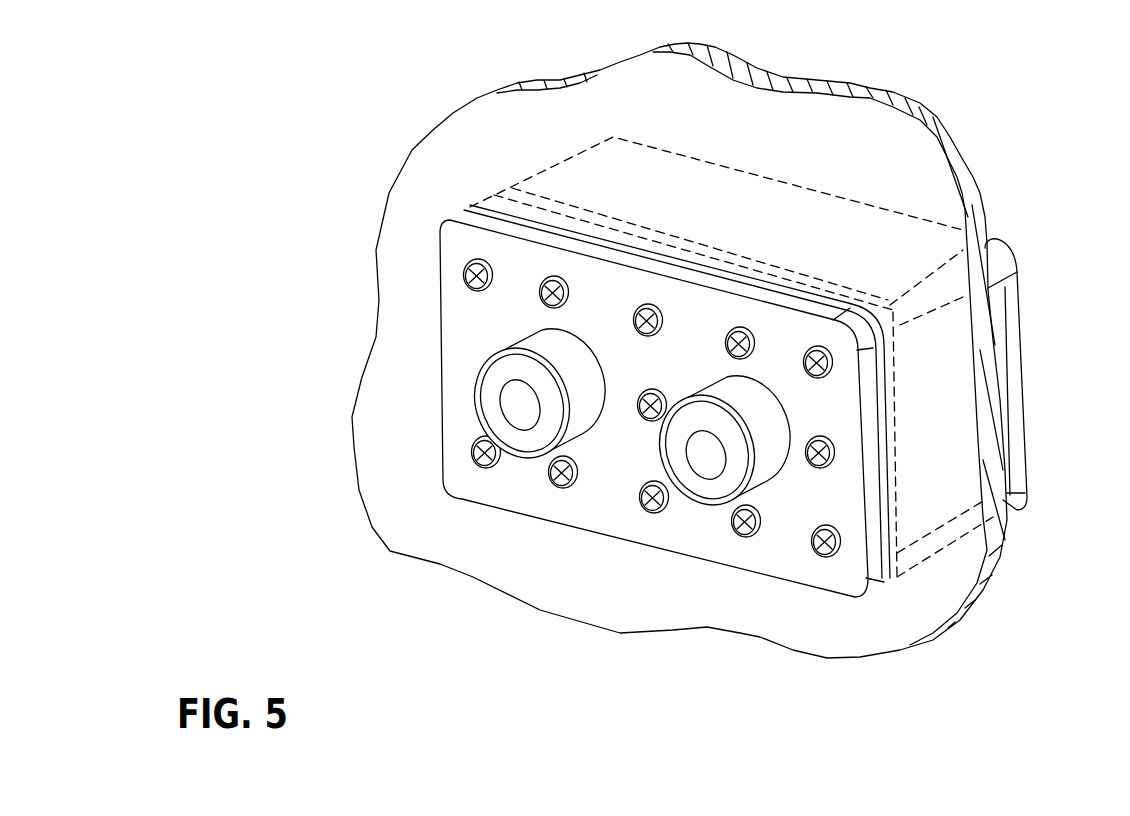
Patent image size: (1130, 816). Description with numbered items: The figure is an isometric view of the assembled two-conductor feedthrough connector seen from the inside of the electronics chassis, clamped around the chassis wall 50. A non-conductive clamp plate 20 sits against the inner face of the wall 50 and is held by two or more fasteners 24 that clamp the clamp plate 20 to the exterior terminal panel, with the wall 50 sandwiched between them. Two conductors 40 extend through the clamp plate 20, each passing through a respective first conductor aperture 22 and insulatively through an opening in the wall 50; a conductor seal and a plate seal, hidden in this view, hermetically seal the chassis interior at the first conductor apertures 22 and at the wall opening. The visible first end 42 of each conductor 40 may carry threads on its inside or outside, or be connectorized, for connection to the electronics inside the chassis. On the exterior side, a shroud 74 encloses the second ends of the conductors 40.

The non-conductive clamp plate 20 is at (440, 228).
The first conductor aperture 22 is at (541, 330).
The fastener 24 is at (463, 266).
The conductor 40 is at (517, 438).
The first end 42 is at (474, 413).
The wall 50 is at (433, 130).
The shroud 74 is at (1018, 300).